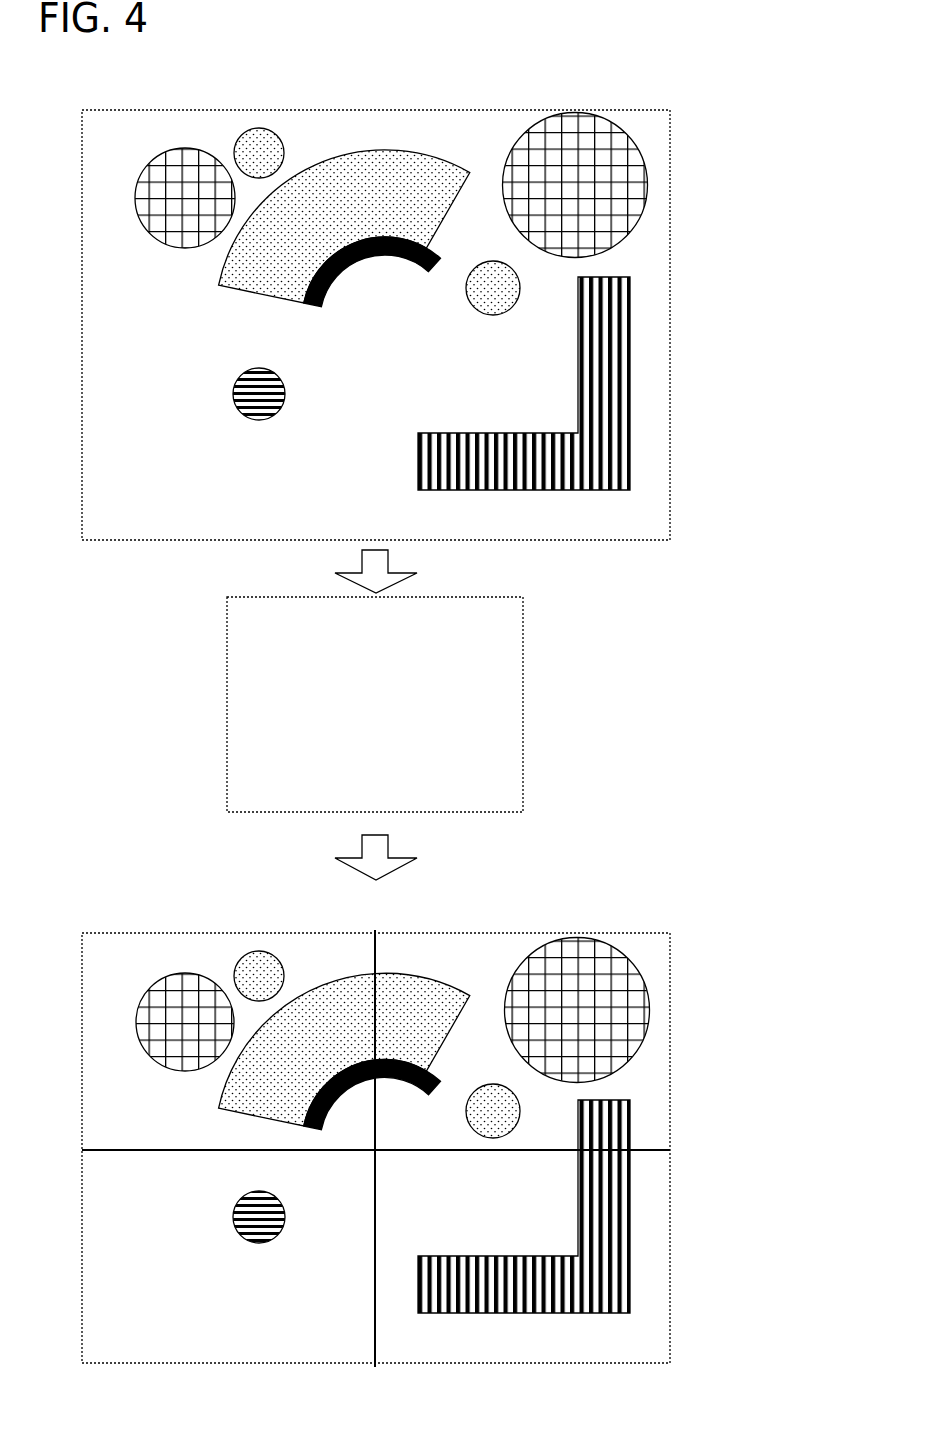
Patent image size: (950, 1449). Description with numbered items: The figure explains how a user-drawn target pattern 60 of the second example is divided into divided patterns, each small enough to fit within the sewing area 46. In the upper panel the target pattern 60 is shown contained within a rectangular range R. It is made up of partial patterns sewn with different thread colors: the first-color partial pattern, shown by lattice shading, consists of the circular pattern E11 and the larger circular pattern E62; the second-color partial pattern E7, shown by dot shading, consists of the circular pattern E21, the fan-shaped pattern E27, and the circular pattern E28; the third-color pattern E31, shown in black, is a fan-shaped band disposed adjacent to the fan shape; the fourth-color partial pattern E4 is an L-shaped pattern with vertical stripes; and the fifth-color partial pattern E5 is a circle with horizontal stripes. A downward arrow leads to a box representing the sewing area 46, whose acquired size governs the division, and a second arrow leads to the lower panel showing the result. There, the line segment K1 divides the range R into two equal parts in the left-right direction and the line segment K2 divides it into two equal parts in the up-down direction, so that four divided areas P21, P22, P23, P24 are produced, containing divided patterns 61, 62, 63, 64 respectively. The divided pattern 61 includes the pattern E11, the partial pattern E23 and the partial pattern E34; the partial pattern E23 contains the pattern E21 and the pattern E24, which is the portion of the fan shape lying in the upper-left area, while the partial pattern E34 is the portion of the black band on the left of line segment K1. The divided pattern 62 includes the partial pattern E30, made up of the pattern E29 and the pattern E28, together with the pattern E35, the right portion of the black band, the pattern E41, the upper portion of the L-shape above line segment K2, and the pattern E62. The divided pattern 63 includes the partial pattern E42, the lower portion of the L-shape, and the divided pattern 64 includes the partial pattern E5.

The rectangular range R is at (133, 110).
The partial pattern E7 is at (258, 75).
The pattern E21 is at (278, 131).
The pattern E27 is at (312, 157).
The pattern E31 is at (378, 258).
The pattern E28 is at (492, 262).
The pattern E62 is at (597, 115).
The target pattern 60 is at (652, 152).
The pattern E11 is at (165, 246).
The partial pattern E4 is at (423, 433).
The partial pattern E5 is at (276, 419).
The sewing area 46 is at (525, 662).
The divided pattern 61 is at (98, 948).
The divided pattern 62 is at (667, 1005).
The divided pattern 63 is at (662, 1317).
The divided pattern 64 is at (117, 1312).
The partial pattern E23 is at (348, 892).
The partial pattern E30 is at (515, 892).
The pattern E24 is at (320, 985).
The pattern E29 is at (410, 974).
The line segment K1 is at (374, 933).
The line segment K2 is at (645, 1148).
The pattern E41 is at (630, 1107).
The partial pattern E42 is at (632, 1260).
The partial pattern E34 is at (322, 1133).
The pattern E35 is at (437, 1092).
The divided area P21 is at (350, 1132).
The divided area P22 is at (401, 1134).
The divided area P23 is at (400, 1165).
The divided area P24 is at (351, 1164).